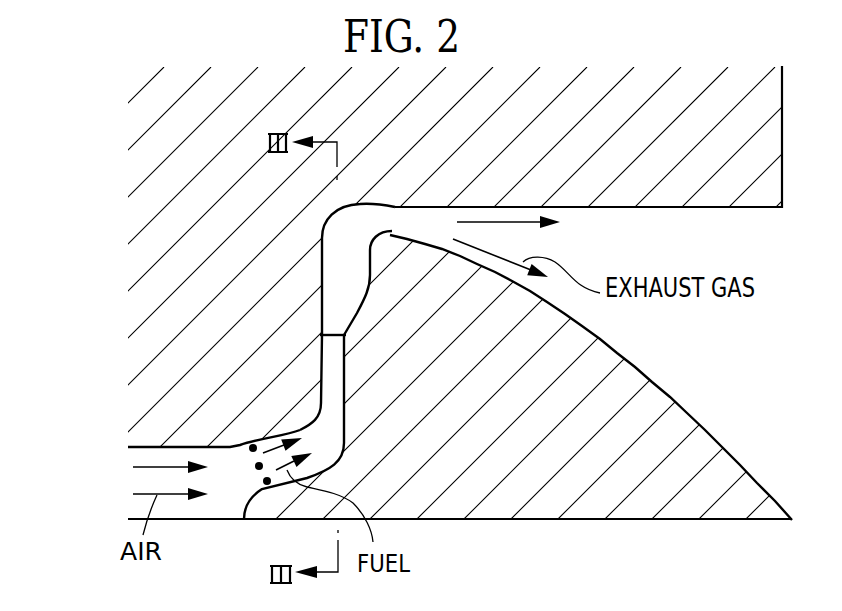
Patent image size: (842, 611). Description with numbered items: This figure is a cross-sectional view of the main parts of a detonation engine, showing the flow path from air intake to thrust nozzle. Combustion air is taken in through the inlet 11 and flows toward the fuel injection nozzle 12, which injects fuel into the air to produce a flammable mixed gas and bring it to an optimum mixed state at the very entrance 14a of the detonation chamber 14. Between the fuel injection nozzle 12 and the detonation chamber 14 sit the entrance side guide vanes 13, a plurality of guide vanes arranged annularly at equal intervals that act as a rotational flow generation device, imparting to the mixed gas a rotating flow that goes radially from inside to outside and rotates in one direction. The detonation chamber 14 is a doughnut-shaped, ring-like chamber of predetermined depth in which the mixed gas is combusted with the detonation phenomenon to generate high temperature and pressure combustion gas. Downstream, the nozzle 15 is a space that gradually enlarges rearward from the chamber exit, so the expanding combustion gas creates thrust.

The inlet 11 is at (135, 480).
The fuel injection nozzle 12 is at (228, 500).
The entrance side guide vanes 13 is at (327, 410).
The detonation chamber 14 is at (347, 253).
The entrance of the detonation chamber 14a is at (332, 332).
The nozzle 15 is at (578, 239).